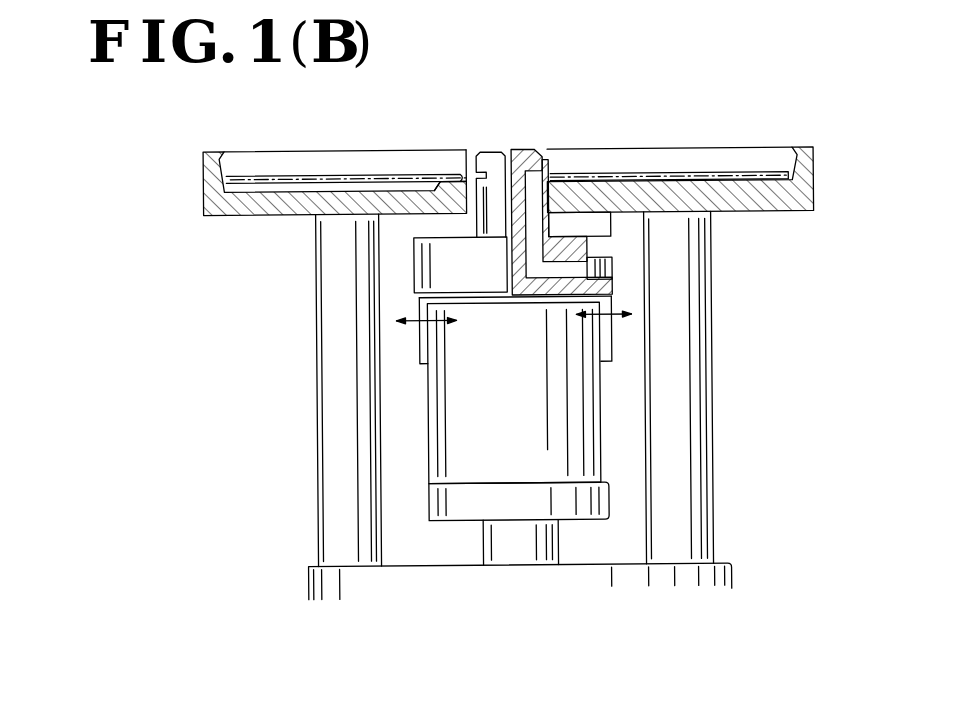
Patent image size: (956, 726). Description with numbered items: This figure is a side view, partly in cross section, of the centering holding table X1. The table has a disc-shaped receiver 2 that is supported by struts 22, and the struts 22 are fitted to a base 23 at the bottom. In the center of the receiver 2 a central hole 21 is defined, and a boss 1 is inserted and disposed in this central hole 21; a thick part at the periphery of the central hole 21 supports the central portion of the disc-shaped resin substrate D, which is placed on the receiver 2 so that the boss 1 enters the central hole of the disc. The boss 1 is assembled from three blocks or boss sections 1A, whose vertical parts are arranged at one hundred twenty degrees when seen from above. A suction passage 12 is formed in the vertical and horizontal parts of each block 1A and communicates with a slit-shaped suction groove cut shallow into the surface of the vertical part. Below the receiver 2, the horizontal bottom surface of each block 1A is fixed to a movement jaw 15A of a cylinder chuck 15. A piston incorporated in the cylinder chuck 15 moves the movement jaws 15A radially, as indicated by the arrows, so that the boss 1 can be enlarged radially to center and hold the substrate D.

The boss 1 is at (502, 128).
The block 1A is at (562, 193).
The disc-shaped receiver 2 is at (265, 214).
The suction passage 12 is at (530, 236).
The cylinder chuck 15 is at (520, 400).
The movement jaw 15A is at (422, 335).
The central hole 21 is at (467, 182).
The struts 22 is at (690, 365).
The base 23 is at (530, 607).
The disc-shaped resin substrate D is at (655, 173).
The centering holding table X1 is at (607, 104).